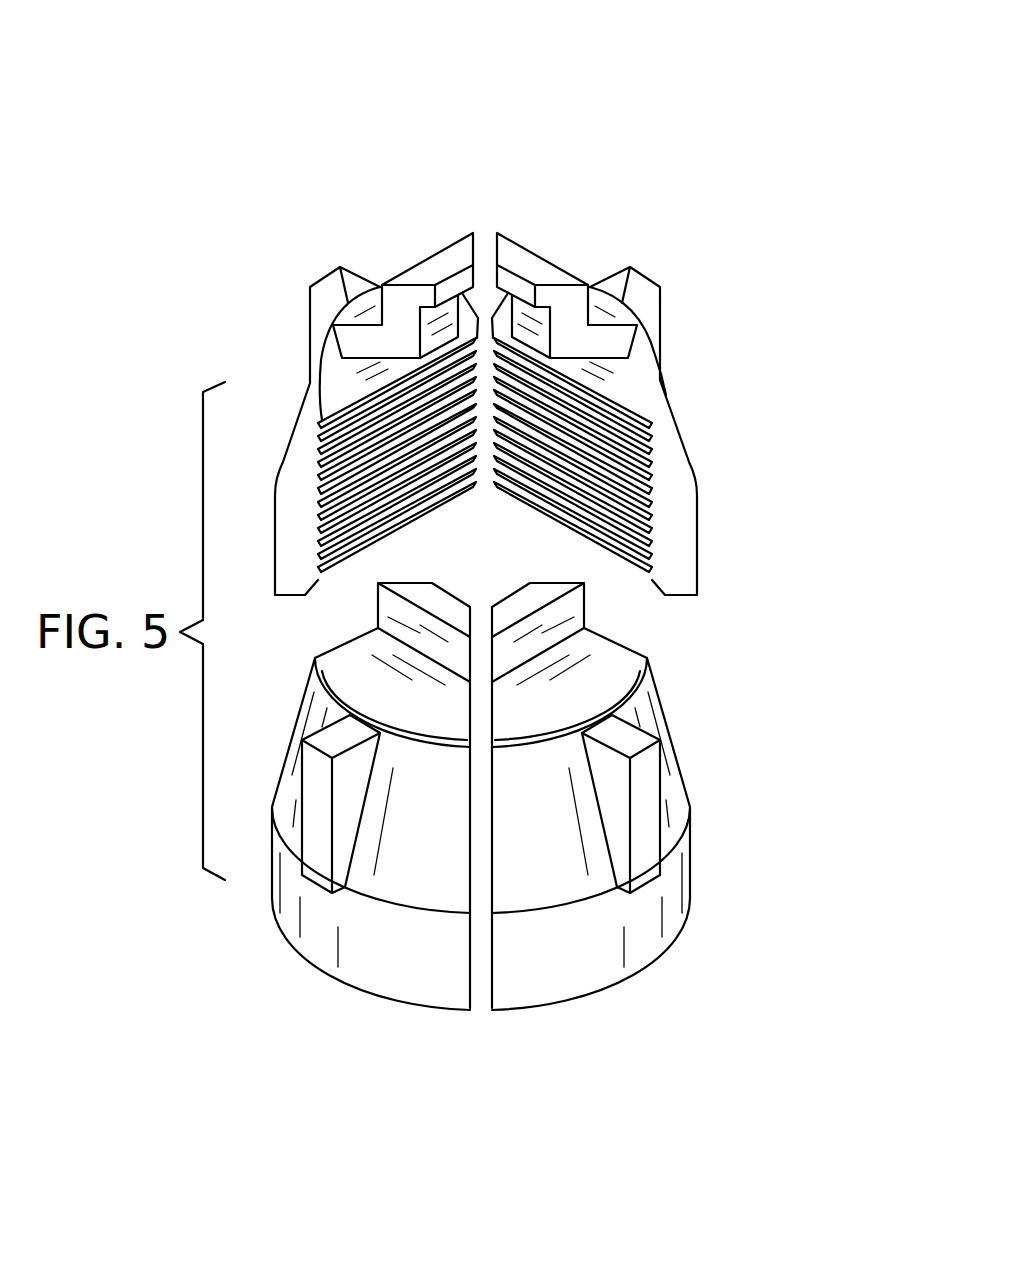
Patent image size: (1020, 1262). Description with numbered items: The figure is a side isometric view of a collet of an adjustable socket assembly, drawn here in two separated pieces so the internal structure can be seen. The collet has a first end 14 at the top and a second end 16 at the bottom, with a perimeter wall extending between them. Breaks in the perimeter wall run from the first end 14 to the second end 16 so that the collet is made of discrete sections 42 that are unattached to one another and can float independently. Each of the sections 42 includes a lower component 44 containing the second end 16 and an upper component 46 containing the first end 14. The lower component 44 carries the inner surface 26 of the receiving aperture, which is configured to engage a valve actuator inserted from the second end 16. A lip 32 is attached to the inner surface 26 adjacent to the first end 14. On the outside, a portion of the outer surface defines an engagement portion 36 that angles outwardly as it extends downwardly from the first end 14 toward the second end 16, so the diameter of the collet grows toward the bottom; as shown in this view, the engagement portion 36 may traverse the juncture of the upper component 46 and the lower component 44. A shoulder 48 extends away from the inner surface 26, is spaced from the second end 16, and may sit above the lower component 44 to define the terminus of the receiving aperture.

The first end 14 is at (545, 607).
The second end 16 is at (651, 953).
The inner surface 26 is at (555, 478).
The lip 32 is at (452, 278).
The engagement portion 36 is at (542, 813).
The sections 42 is at (531, 228).
The lower component 44 is at (742, 555).
The upper component 46 is at (612, 316).
The shoulder 48 is at (343, 390).